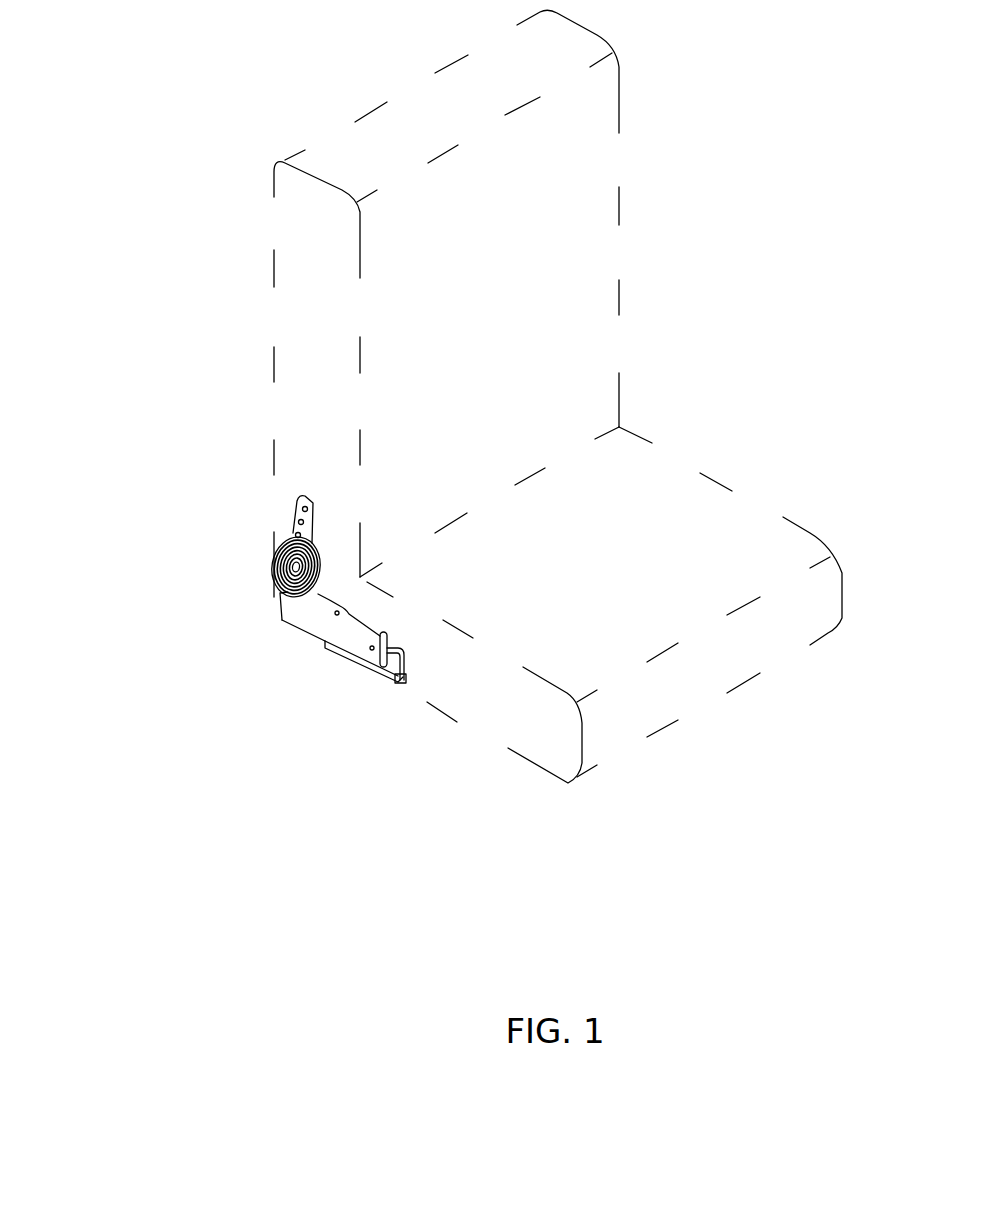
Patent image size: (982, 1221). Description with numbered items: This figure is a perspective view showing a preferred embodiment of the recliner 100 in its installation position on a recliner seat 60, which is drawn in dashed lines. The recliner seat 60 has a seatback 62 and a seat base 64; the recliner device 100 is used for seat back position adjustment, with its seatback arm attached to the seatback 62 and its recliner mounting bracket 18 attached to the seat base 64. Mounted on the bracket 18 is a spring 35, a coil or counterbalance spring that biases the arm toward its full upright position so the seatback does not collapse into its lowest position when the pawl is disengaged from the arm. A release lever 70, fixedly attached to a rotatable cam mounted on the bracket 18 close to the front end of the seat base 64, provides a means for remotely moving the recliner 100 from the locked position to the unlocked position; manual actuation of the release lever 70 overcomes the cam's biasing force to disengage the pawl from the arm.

The recliner seat 60 is at (690, 285).
The seatback 62 is at (446, 303).
The seat base 64 is at (601, 605).
The recliner 100 is at (247, 622).
The recliner mounting bracket 18 is at (323, 628).
The spring 35 is at (313, 552).
The release lever 70 is at (388, 637).